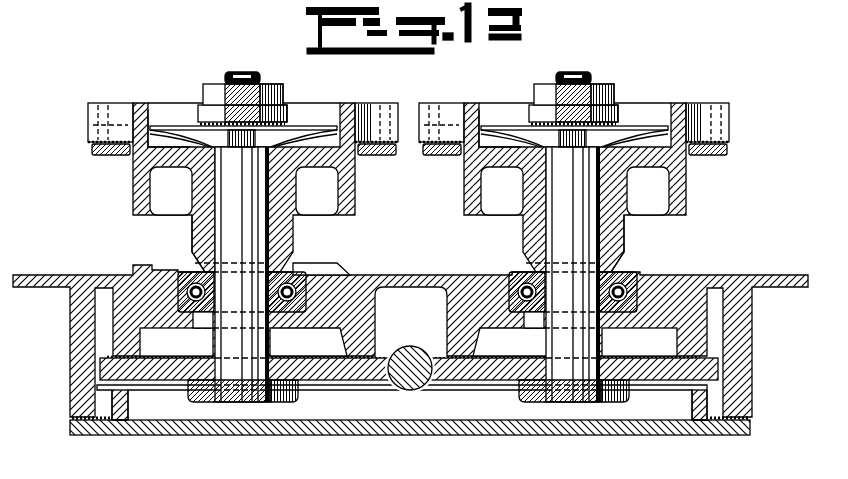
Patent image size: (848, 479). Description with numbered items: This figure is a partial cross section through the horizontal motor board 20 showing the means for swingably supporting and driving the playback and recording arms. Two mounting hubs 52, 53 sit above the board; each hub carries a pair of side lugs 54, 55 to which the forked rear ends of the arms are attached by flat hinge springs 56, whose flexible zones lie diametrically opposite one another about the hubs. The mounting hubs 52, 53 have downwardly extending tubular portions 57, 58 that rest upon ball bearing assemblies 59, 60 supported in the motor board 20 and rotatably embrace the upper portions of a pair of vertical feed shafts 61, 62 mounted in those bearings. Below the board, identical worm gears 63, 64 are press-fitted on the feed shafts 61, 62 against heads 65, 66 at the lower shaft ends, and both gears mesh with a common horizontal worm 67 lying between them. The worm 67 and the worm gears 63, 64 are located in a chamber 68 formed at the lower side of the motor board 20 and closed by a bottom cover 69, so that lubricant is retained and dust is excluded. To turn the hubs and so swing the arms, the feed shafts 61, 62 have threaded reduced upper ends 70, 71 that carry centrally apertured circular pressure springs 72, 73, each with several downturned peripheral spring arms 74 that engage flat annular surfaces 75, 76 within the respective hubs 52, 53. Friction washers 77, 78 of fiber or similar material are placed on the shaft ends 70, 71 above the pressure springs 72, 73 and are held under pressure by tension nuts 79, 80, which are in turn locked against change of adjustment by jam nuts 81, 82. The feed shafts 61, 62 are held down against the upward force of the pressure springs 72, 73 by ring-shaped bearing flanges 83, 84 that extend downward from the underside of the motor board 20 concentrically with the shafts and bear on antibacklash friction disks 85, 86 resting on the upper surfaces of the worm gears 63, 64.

The motor board 20 is at (55, 275).
The mounting hub 52 is at (133, 192).
The mounting hub 53 is at (600, 187).
The side lugs 54 is at (88, 117).
The side lugs 55 is at (418, 112).
The flat hinge springs 56 is at (90, 146).
The tubular portion 57 is at (192, 230).
The tubular portion 58 is at (641, 243).
The ball bearing assembly 59 is at (195, 272).
The ball bearing assembly 60 is at (635, 278).
The feed shaft 61 is at (258, 240).
The feed shaft 62 is at (541, 274).
The worm gear 63 is at (344, 382).
The worm gear 64 is at (477, 386).
The head 65 is at (250, 403).
The head 66 is at (574, 402).
The worm 67 is at (412, 391).
The chamber 68 is at (411, 322).
The bottom cover 69 is at (363, 436).
The threaded reduced upper end 70 is at (241, 72).
The threaded reduced upper end 71 is at (577, 95).
The circular pressure spring 72 is at (326, 128).
The circular pressure spring 73 is at (590, 103).
The downturned peripheral spring arms 74 is at (173, 166).
The flat annular surface 75 is at (158, 147).
The flat annular surface 76 is at (500, 112).
The friction washer 77 is at (187, 128).
The friction washer 78 is at (512, 104).
The tension nut 79 is at (288, 120).
The tension nut 80 is at (594, 101).
The jam nut 81 is at (282, 94).
The jam nut 82 is at (587, 83).
The ring-shaped bearing flange 83 is at (148, 333).
The ring-shaped bearing flange 84 is at (476, 333).
The antibacklash friction disk 85 is at (320, 357).
The antibacklash friction disk 86 is at (650, 357).